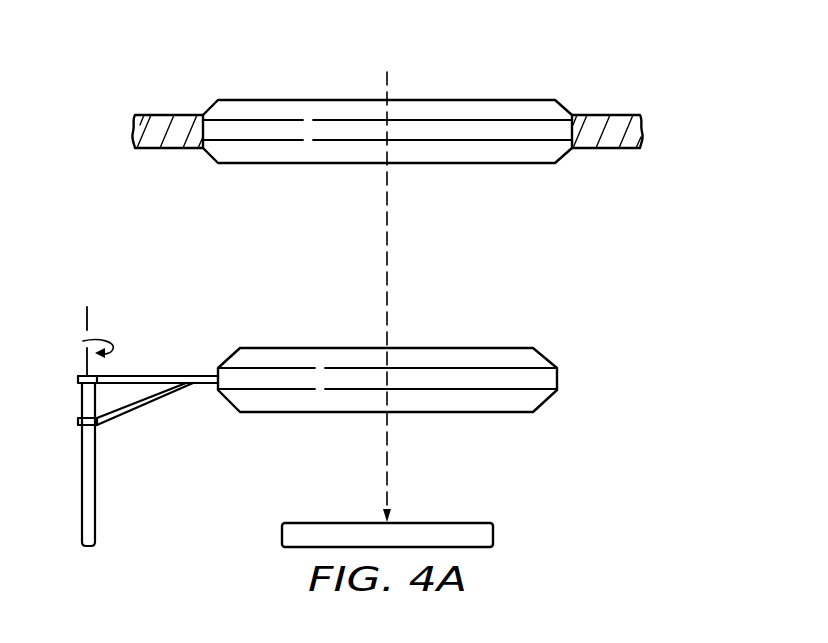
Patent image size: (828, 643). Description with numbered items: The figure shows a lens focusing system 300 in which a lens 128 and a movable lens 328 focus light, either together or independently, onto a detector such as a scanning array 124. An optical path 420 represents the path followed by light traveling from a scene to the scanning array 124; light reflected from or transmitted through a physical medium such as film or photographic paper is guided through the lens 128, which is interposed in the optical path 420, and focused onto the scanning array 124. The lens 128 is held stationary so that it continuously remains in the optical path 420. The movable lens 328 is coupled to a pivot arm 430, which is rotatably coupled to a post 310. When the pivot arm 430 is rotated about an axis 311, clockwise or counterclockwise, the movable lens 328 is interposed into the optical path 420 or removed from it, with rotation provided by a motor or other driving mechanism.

The lens focusing system 300 is at (666, 413).
The optical path 420 is at (387, 72).
The lens 128 is at (502, 100).
The movable lens 328 is at (483, 348).
The pivot arm 430 is at (167, 375).
The post 310 is at (82, 492).
The axis 311 is at (87, 330).
The scanning array 124 is at (450, 523).